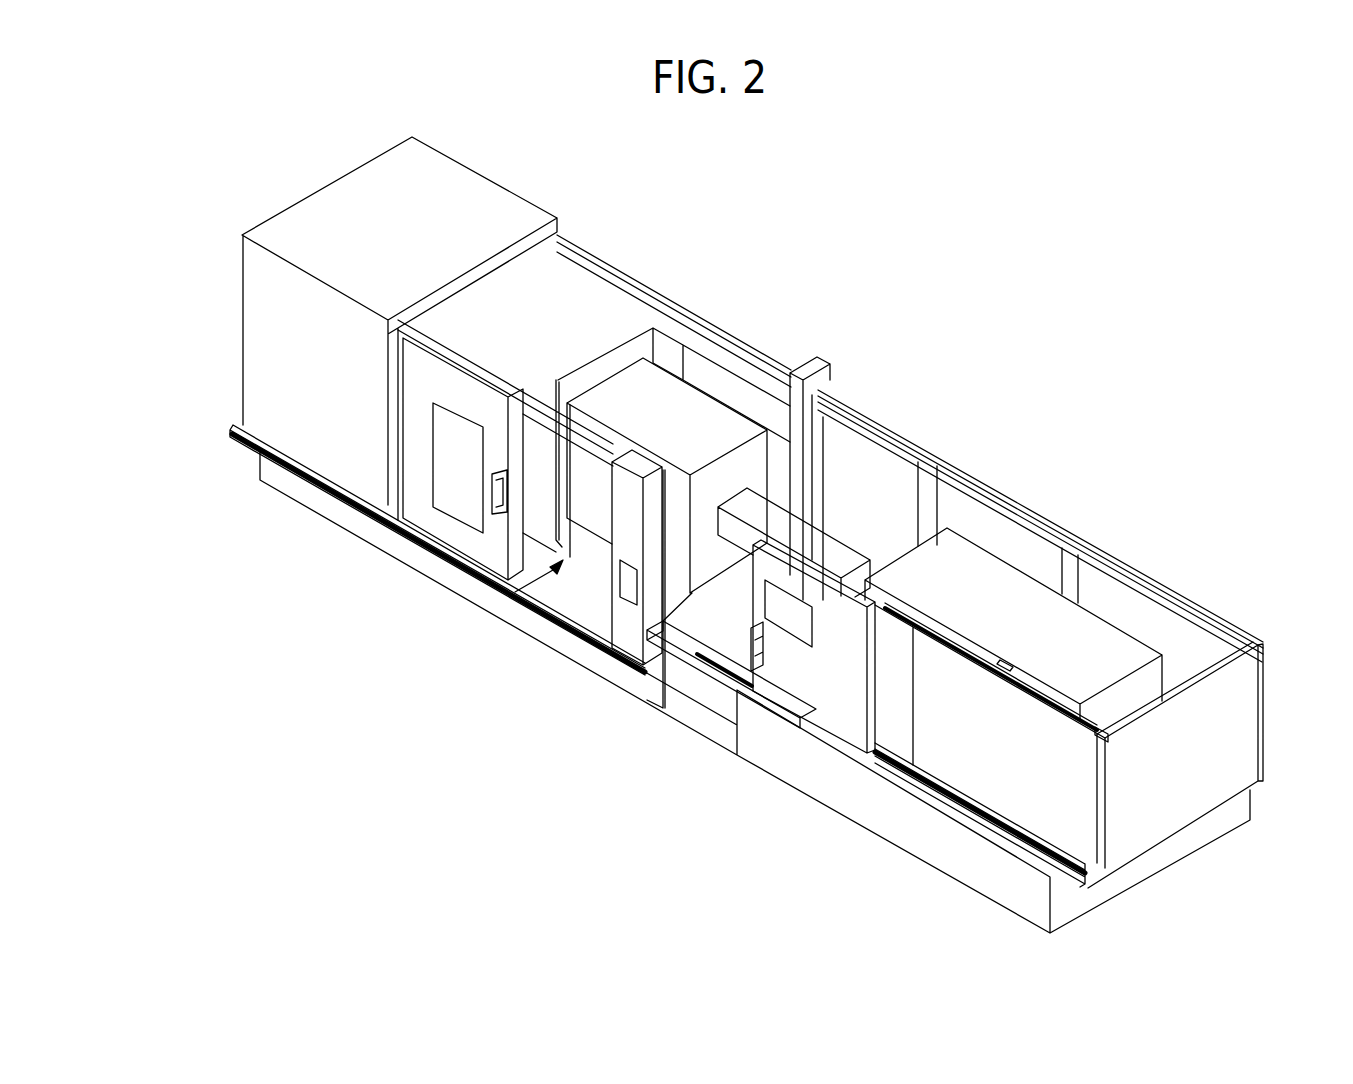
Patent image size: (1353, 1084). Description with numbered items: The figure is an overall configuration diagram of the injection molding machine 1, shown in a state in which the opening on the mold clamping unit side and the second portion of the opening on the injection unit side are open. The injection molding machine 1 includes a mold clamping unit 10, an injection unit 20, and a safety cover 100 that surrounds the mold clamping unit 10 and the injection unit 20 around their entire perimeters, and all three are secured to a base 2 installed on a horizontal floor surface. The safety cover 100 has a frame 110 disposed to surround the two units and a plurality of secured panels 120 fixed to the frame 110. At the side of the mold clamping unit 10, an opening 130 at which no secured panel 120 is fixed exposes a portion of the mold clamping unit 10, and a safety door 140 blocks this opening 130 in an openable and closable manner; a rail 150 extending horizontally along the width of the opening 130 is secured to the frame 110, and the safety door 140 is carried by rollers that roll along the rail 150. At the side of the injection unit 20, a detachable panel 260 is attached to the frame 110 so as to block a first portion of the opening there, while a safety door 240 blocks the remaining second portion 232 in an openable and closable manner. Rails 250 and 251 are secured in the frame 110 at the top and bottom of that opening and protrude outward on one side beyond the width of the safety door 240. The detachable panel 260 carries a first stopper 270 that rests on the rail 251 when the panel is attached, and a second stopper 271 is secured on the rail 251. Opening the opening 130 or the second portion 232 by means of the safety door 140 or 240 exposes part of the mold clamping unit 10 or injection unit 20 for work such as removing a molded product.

The injection molding machine 1 is at (1005, 212).
The base 2 is at (580, 652).
The mold clamping unit 10 is at (732, 388).
The injection unit 20 is at (1042, 563).
The safety cover 100 is at (232, 325).
The frame 110 is at (1203, 660).
The secured panels 120 is at (325, 430).
The opening 130 is at (575, 648).
The safety door 140 is at (430, 520).
The rail 150 is at (234, 420).
The second portion 232 is at (678, 627).
The safety door 240 is at (786, 676).
The rail 250 is at (1090, 883).
The rail 251 is at (1105, 727).
The detachable panel 260 is at (903, 733).
The first stopper 270 is at (885, 607).
The second stopper 271 is at (1002, 668).